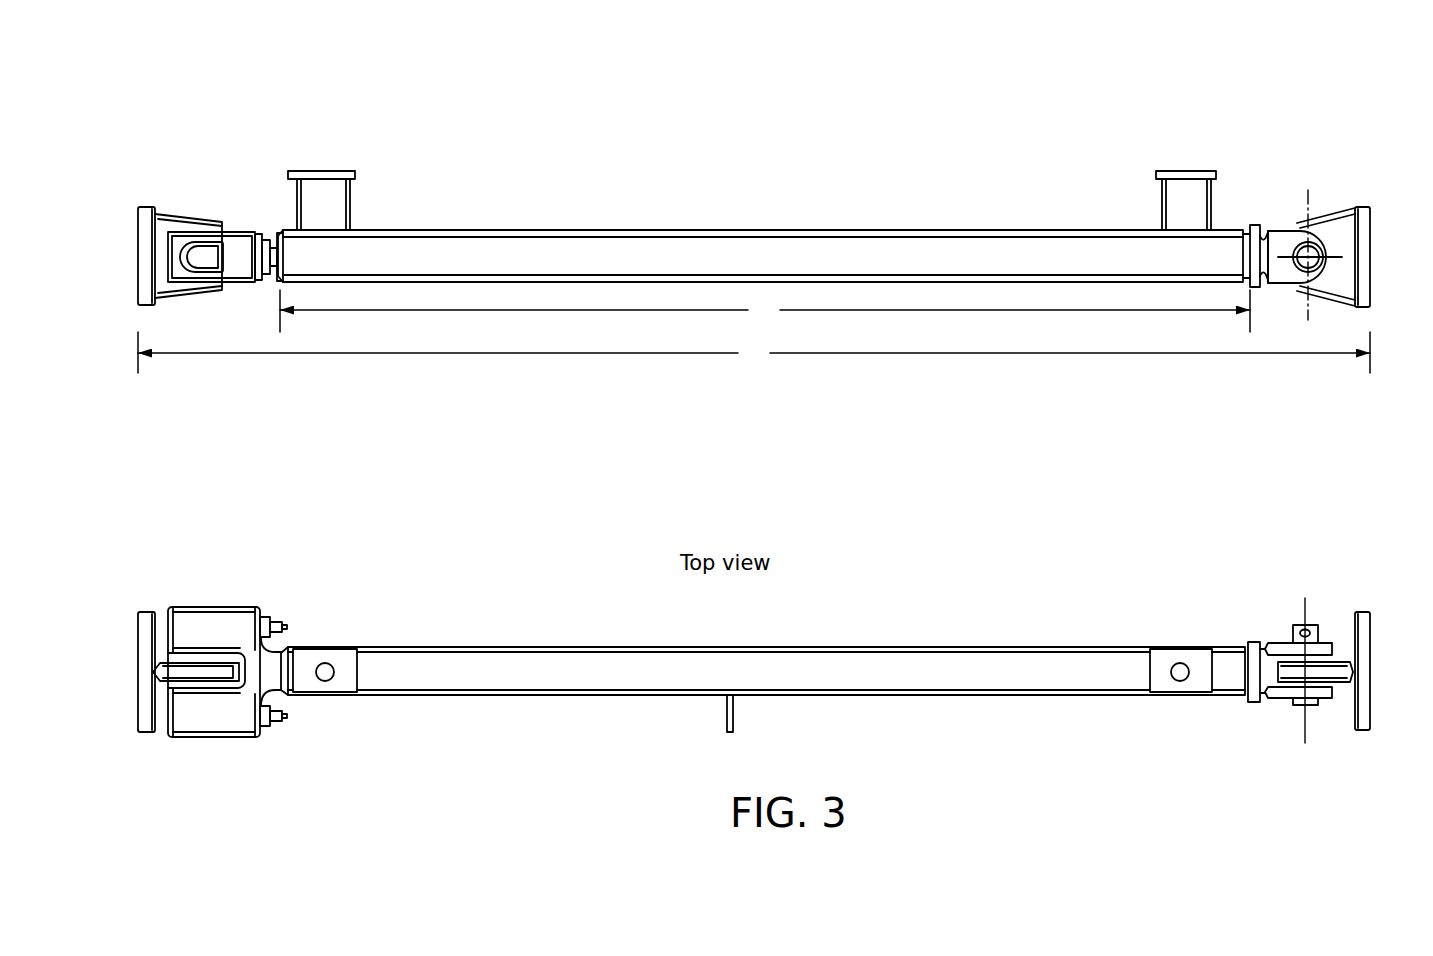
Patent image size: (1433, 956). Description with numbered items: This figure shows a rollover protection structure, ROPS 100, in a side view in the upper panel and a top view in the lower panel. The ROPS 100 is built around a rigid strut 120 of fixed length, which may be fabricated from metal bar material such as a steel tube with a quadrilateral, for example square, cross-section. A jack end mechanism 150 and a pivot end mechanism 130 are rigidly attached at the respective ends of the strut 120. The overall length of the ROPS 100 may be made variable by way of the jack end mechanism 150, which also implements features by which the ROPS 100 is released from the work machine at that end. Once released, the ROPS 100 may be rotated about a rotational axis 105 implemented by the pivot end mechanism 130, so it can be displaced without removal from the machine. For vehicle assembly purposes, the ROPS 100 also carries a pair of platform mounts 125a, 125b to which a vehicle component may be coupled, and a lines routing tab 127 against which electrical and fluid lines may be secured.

The ROPS 100 is at (214, 126).
The rotational axis 105 is at (1305, 181).
The rigid strut 120 is at (737, 229).
The platform mount 125a is at (325, 170).
The platform mount 125b is at (1186, 170).
The lines routing tab 127 is at (728, 715).
The pivot end mechanism 130 is at (1268, 605).
The jack end mechanism 150 is at (201, 576).